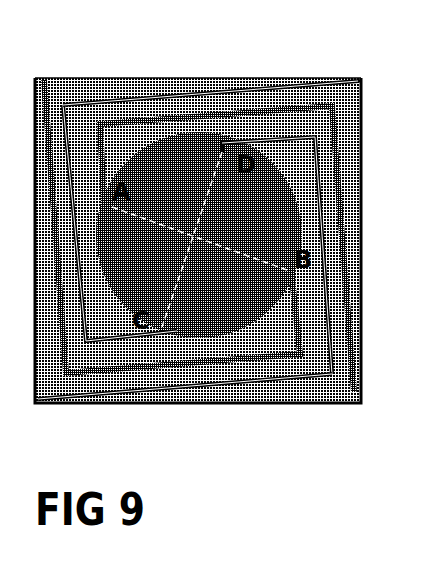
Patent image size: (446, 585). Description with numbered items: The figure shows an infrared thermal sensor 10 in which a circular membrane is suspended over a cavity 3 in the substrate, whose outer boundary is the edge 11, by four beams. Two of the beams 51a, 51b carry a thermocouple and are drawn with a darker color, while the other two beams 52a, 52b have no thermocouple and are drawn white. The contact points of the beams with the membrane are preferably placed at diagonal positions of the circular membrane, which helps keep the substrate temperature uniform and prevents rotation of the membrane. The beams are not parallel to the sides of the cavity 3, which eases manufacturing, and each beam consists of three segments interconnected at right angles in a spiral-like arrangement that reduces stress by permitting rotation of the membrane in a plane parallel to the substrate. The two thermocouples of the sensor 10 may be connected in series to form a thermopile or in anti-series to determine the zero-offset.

The cavity 3 is at (55, 100).
The infrared thermal sensor 10 is at (234, 425).
The edge 11 is at (123, 78).
The beam with thermocouple 51a is at (303, 108).
The beam with thermocouple 51b is at (145, 368).
The beam without thermocouple 52a is at (215, 95).
The beam without thermocouple 52b is at (291, 377).